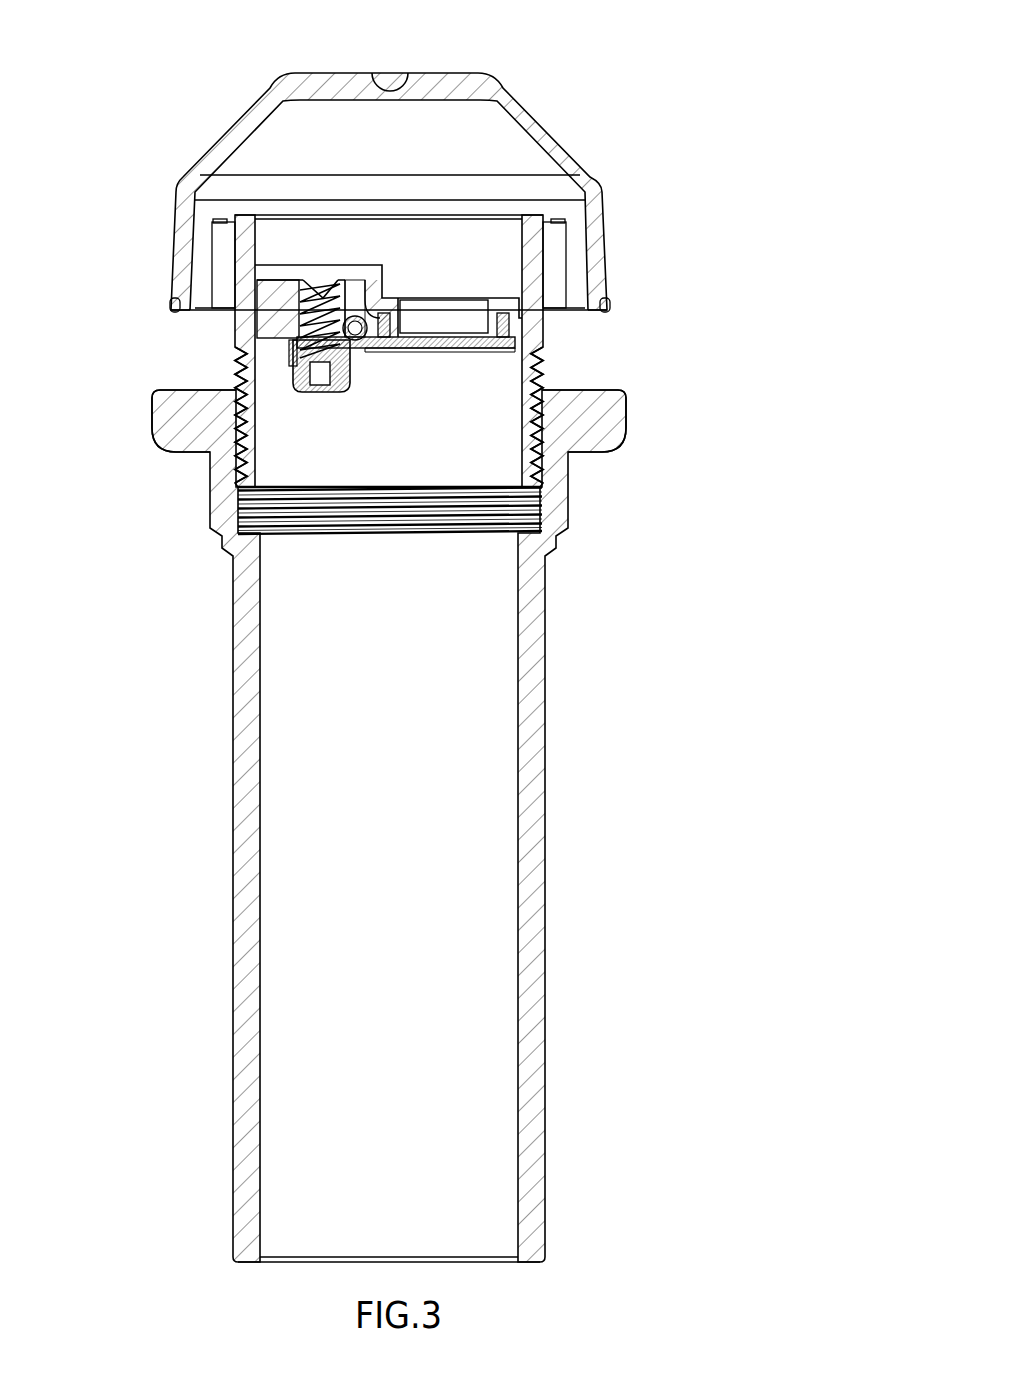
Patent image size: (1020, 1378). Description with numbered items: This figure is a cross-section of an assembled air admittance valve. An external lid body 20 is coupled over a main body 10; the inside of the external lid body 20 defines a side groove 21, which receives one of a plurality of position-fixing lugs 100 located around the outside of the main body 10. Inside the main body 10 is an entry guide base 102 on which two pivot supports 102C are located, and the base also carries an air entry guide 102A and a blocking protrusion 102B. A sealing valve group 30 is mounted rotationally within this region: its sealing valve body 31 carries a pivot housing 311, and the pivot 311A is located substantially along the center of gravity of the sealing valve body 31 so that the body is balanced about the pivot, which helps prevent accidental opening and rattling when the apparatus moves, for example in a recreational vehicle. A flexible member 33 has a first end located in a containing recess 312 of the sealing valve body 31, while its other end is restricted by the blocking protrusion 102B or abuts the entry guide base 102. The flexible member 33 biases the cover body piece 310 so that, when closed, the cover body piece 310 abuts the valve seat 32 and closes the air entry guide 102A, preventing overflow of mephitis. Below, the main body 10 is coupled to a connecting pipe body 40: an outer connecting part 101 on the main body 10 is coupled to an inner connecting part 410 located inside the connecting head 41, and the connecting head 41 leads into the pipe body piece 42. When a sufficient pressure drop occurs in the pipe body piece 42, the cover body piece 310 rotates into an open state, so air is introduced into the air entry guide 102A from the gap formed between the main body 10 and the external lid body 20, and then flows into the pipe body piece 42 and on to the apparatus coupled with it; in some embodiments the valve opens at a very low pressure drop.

The main body 10 is at (445, 247).
The external lid body 20 is at (643, 195).
The side groove 21 is at (210, 265).
The sealing valve group 30 is at (307, 470).
The sealing valve body 31 is at (380, 346).
The cover body piece 310 is at (487, 350).
The pivot housing 311 is at (329, 497).
The pivot 311A is at (350, 383).
The containing recess 312 is at (297, 385).
The valve seat 32 is at (509, 345).
The flexible member 33 is at (300, 318).
The connecting pipe body 40 is at (461, 821).
The connecting head 41 is at (605, 422).
The inner connecting part 410 is at (543, 518).
The pipe body piece 42 is at (532, 987).
The position-fixing lug 100 is at (411, 247).
The outer connecting part 101 is at (545, 388).
The entry guide base 102 is at (288, 273).
The air entry guide 102A is at (457, 320).
The blocking protrusion 102B is at (320, 294).
The pivot support 102C is at (357, 290).